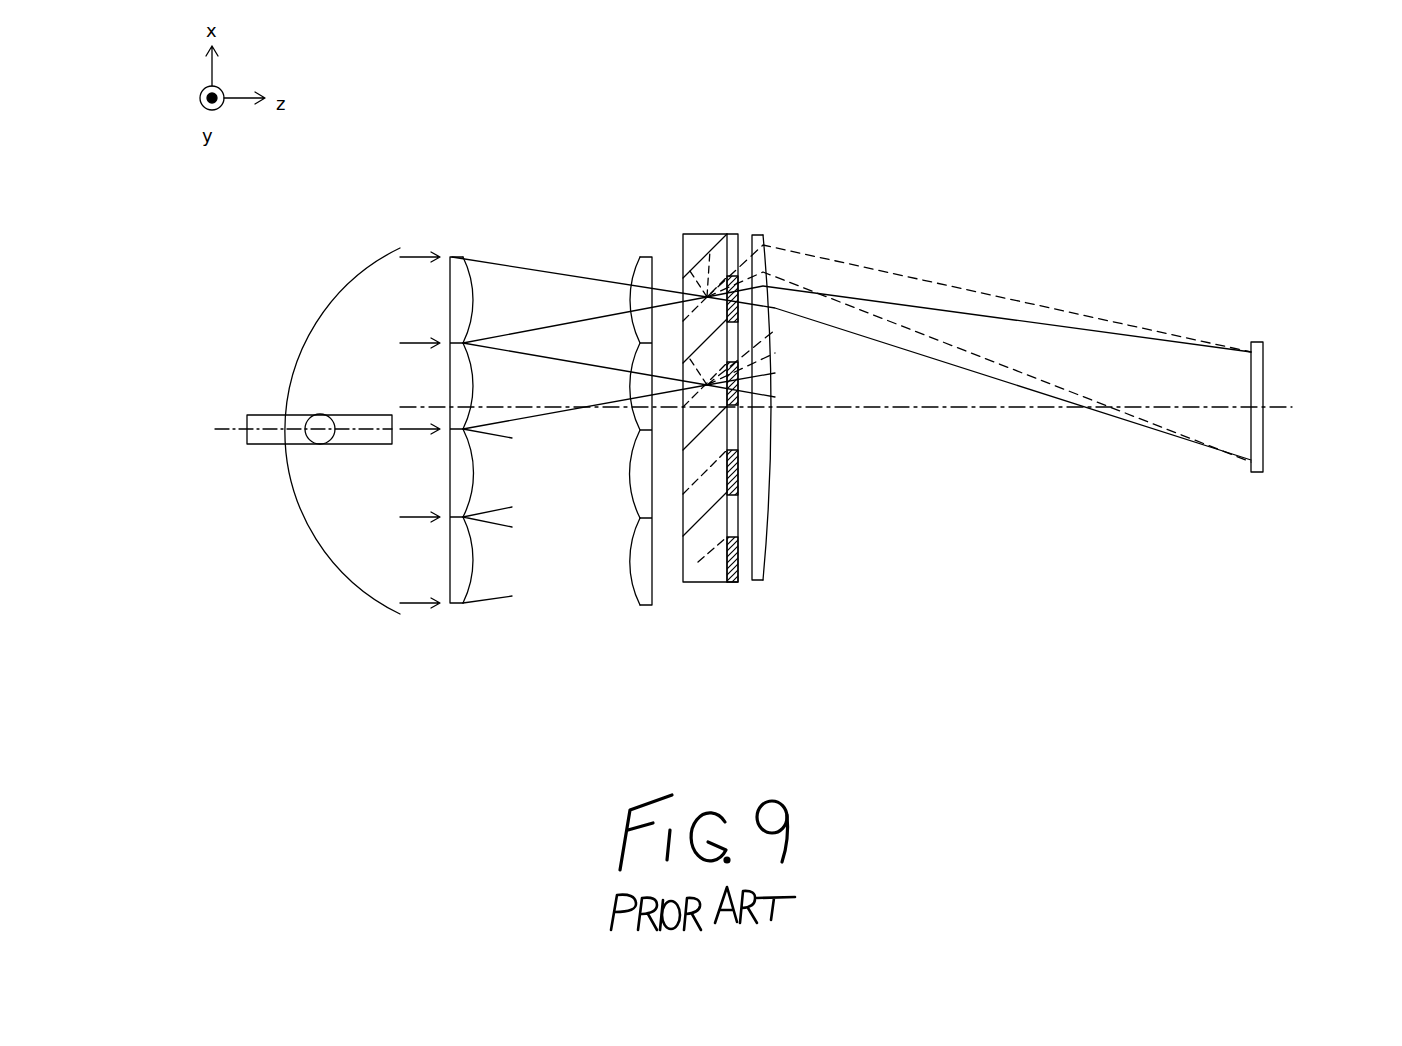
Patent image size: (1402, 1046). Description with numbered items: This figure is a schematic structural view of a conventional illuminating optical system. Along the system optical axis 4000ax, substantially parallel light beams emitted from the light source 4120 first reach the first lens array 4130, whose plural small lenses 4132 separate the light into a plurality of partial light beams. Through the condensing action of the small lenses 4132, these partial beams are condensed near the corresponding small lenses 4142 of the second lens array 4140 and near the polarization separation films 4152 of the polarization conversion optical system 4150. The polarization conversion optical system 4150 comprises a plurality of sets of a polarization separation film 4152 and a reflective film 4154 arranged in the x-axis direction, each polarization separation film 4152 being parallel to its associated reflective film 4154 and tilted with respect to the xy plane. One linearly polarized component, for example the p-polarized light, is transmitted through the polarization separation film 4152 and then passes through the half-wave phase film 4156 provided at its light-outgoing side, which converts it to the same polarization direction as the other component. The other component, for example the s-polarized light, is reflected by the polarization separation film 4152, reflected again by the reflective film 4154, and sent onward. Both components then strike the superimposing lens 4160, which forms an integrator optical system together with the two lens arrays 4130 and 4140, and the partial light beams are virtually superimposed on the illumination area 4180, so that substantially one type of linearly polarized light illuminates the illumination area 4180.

The light source 4120 is at (371, 232).
The first lens array 4130 is at (505, 442).
The small lens 4132 is at (473, 582).
The second lens array 4140 is at (621, 412).
The small lens 4142 is at (628, 582).
The polarization conversion optical system 4150 is at (742, 415).
The polarization separation film 4152 is at (704, 558).
The reflective film 4154 is at (687, 582).
The λ/2 phase film 4156 is at (737, 573).
The superimposing lens 4160 is at (755, 235).
The illumination area 4180 is at (1257, 342).
The system optical axis 4000ax is at (1272, 406).